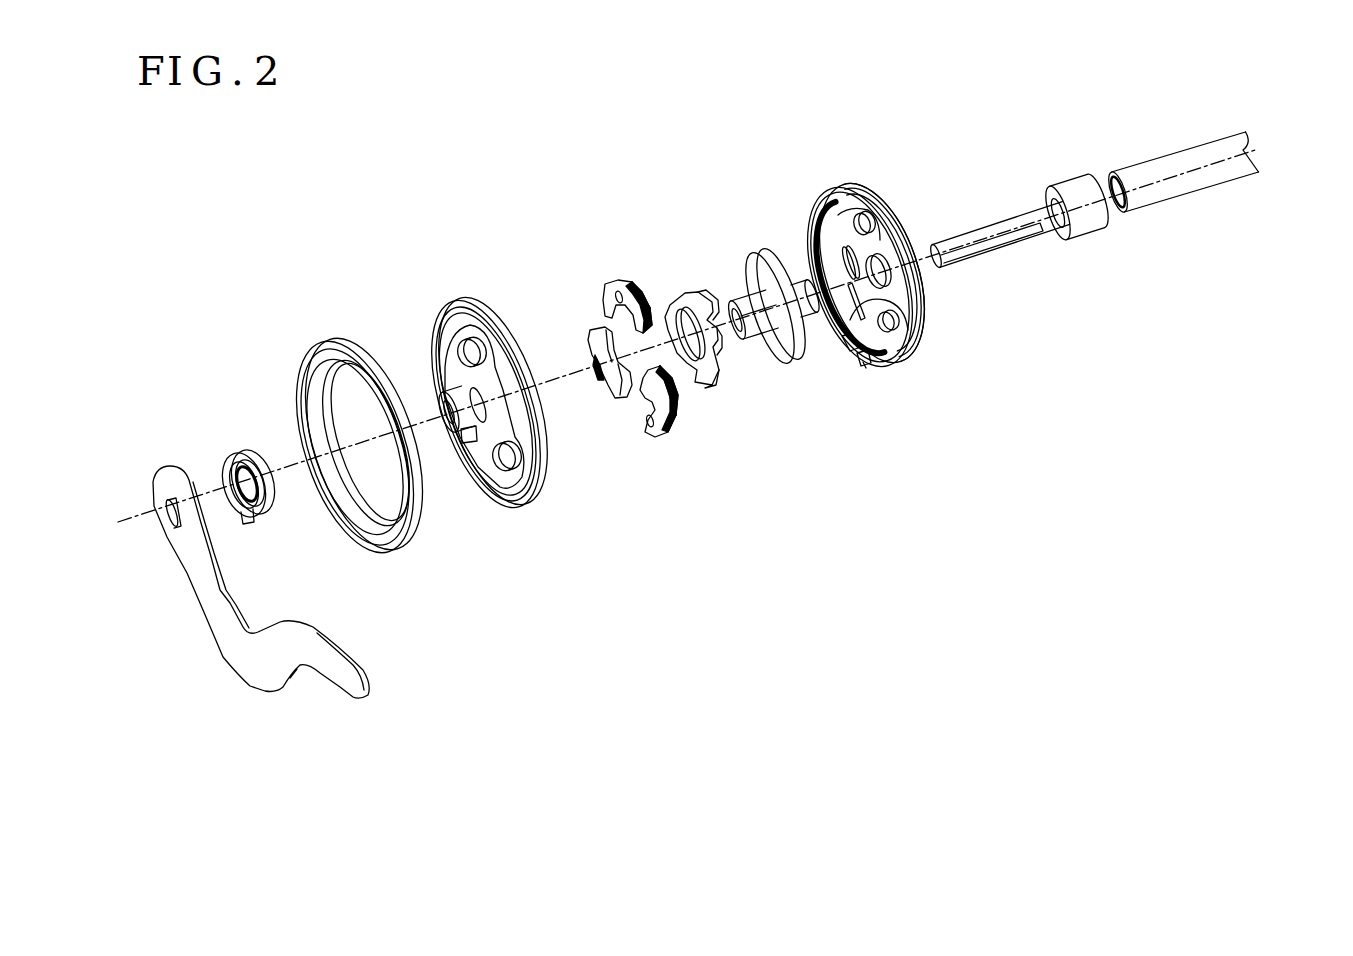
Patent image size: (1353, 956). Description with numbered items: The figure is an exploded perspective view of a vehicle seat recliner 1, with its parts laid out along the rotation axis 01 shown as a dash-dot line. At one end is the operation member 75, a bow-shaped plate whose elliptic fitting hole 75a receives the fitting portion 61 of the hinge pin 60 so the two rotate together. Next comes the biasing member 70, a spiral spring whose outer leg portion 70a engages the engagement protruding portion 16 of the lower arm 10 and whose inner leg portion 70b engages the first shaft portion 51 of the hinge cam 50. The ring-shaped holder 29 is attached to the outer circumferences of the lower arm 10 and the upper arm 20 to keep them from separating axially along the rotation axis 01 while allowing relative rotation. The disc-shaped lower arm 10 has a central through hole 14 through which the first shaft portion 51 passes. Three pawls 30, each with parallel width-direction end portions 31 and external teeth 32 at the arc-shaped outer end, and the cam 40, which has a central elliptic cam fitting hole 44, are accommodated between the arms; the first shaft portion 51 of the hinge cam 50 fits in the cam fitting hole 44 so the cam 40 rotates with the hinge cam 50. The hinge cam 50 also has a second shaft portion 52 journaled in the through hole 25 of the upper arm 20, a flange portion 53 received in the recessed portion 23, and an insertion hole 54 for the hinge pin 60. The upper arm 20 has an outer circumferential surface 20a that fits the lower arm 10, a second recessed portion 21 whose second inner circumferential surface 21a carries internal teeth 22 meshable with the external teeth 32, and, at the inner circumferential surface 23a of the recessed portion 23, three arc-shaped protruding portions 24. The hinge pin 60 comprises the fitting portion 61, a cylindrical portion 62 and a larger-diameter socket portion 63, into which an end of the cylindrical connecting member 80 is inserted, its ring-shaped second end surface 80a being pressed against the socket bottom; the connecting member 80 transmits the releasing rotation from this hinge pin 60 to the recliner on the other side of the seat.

The rotation axis 01 is at (127, 519).
The recliner 1 is at (940, 163).
The lower arm 10 is at (457, 310).
The through hole 14 is at (446, 394).
The engagement protruding portion 16 is at (463, 444).
The upper arm 20 is at (838, 192).
The outer circumferential surface 20a is at (911, 347).
The second recessed portion 21 is at (875, 367).
The second inner circumferential surface 21a is at (863, 366).
The internal teeth 22 is at (855, 353).
The recessed portion 23 is at (828, 212).
The inner circumferential surface 23a is at (822, 243).
The protruding portion 24 is at (867, 220).
The through hole 25 is at (878, 258).
The holder 29 is at (329, 348).
The pawl 30 is at (603, 288).
The width-direction end portions 31 is at (602, 300).
The external teeth 32 is at (620, 278).
The cam 40 is at (703, 390).
The cam fitting hole 44 is at (688, 296).
The hinge cam 50 is at (755, 267).
The first shaft portion 51 is at (749, 328).
The second shaft portion 52 is at (810, 314).
The flange portion 53 is at (787, 350).
The insertion hole 54 is at (735, 340).
The hinge pin 60 is at (1072, 185).
The fitting portion 61 is at (990, 248).
The cylindrical portion 62 is at (1050, 232).
The socket portion 63 is at (1082, 233).
The biasing member 70 is at (249, 457).
The leg portion 70a is at (247, 527).
The leg portion 70b is at (259, 497).
The operation member 75 is at (239, 654).
The fitting hole 75a is at (168, 530).
The connecting member 80 is at (1150, 168).
The second end surfaces 80a is at (1117, 215).